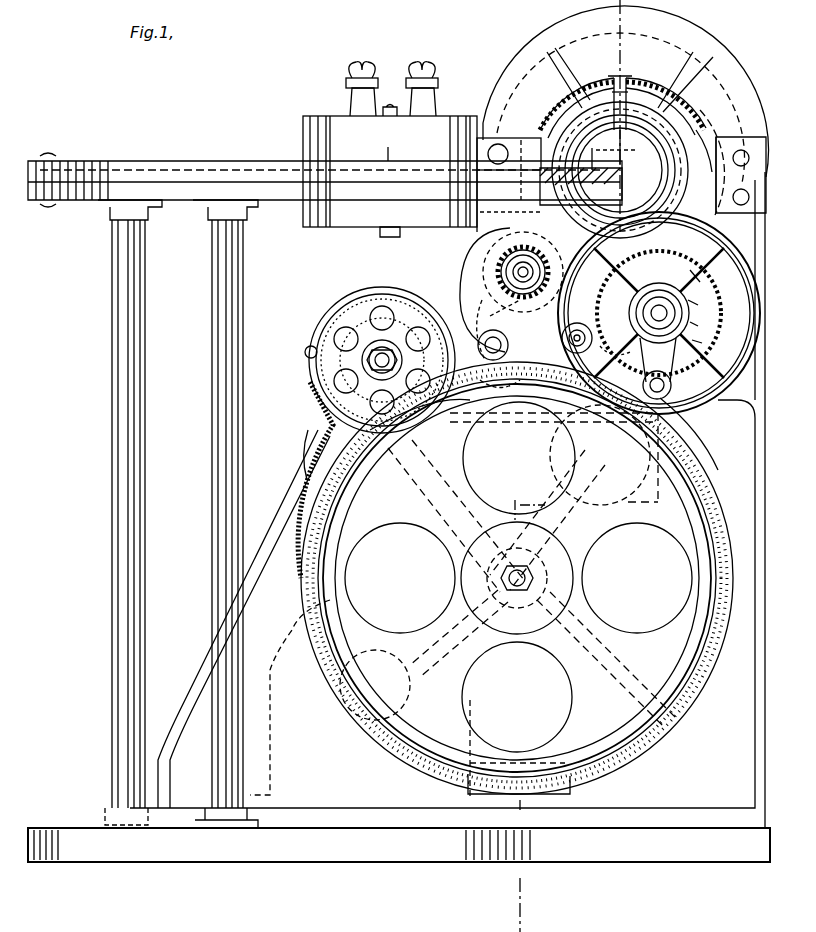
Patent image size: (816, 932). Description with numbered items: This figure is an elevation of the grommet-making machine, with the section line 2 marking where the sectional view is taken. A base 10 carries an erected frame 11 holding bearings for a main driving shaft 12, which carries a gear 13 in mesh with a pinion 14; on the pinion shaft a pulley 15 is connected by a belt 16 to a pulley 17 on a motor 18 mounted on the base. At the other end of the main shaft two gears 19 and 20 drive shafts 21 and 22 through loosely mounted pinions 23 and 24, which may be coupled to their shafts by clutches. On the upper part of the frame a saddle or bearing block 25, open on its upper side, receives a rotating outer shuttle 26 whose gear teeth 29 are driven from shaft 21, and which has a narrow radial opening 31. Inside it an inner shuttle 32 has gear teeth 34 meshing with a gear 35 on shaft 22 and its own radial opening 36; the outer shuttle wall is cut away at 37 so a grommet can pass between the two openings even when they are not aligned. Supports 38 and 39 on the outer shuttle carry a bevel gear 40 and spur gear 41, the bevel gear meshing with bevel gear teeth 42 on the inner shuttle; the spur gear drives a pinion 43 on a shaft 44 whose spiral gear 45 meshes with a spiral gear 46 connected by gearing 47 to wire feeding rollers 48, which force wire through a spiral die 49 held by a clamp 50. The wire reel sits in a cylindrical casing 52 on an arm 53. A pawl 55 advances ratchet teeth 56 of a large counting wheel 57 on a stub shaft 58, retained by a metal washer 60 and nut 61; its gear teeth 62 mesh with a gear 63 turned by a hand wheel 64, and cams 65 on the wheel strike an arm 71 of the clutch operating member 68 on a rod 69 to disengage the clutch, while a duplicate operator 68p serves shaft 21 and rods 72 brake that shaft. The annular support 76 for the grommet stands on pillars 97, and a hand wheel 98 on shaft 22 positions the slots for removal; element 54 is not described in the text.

The section line 2 is at (622, 12).
The base 10 is at (345, 848).
The frame 11 is at (305, 470).
The main driving shaft 12 is at (654, 313).
The gear 13 is at (605, 368).
The pinion 14 is at (580, 440).
The pulley 15 is at (466, 440).
The belt 16 is at (406, 504).
The pulley 17 is at (392, 672).
The motor 18 is at (290, 650).
The gear 19 is at (519, 748).
The gear 20 is at (500, 386).
The shaft 21 is at (508, 272).
The shaft 22 is at (704, 325).
The pinion 23 is at (500, 264).
The pinion 24 is at (707, 343).
The saddle or bearing block 25 is at (523, 78).
The outer shuttle 26 is at (575, 82).
The gear teeth 29 is at (660, 88).
The radial opening 31 is at (618, 60).
The inner shuttle 32 is at (620, 170).
The gear teeth 34 is at (636, 94).
The gear 35 is at (703, 305).
The radial opening 36 is at (624, 147).
The cut away space 37 is at (608, 94).
The support 38 is at (745, 175).
The support 39 is at (603, 150).
The bevel gear 40 is at (692, 110).
The spur gear 41 is at (620, 170).
The bevel gear teeth 42 is at (720, 75).
The pinion 43 is at (706, 283).
The shaft 44 is at (622, 170).
The spiral gear 45 is at (492, 248).
The spiral gear 46 is at (508, 222).
The gearing 47 is at (521, 138).
The wire feeding rollers 48 is at (598, 158).
The die 49 is at (620, 170).
The clamp 50 is at (620, 170).
The cylindrical casing 52 is at (312, 115).
The arm 53 is at (492, 138).
The gear 54 is at (615, 350).
The pawl 55 is at (490, 330).
The ratchet teeth 56 is at (296, 446).
The counting wheel 57 is at (517, 578).
The stub shaft 58 is at (515, 570).
The metal washer 60 is at (562, 583).
The nut 61 is at (514, 594).
The gear teeth 62 is at (346, 478).
The gear 63 is at (352, 322).
The hand wheel 64 is at (312, 336).
The cams 65 is at (697, 454).
The clutch operating member 68 is at (705, 365).
The clutch operator 68p is at (482, 302).
The rod 69 is at (445, 425).
The arm 71 is at (484, 343).
The rods 72 is at (492, 290).
The support 76 is at (280, 200).
The pillars 97 is at (222, 490).
The hand wheel 98 is at (758, 252).